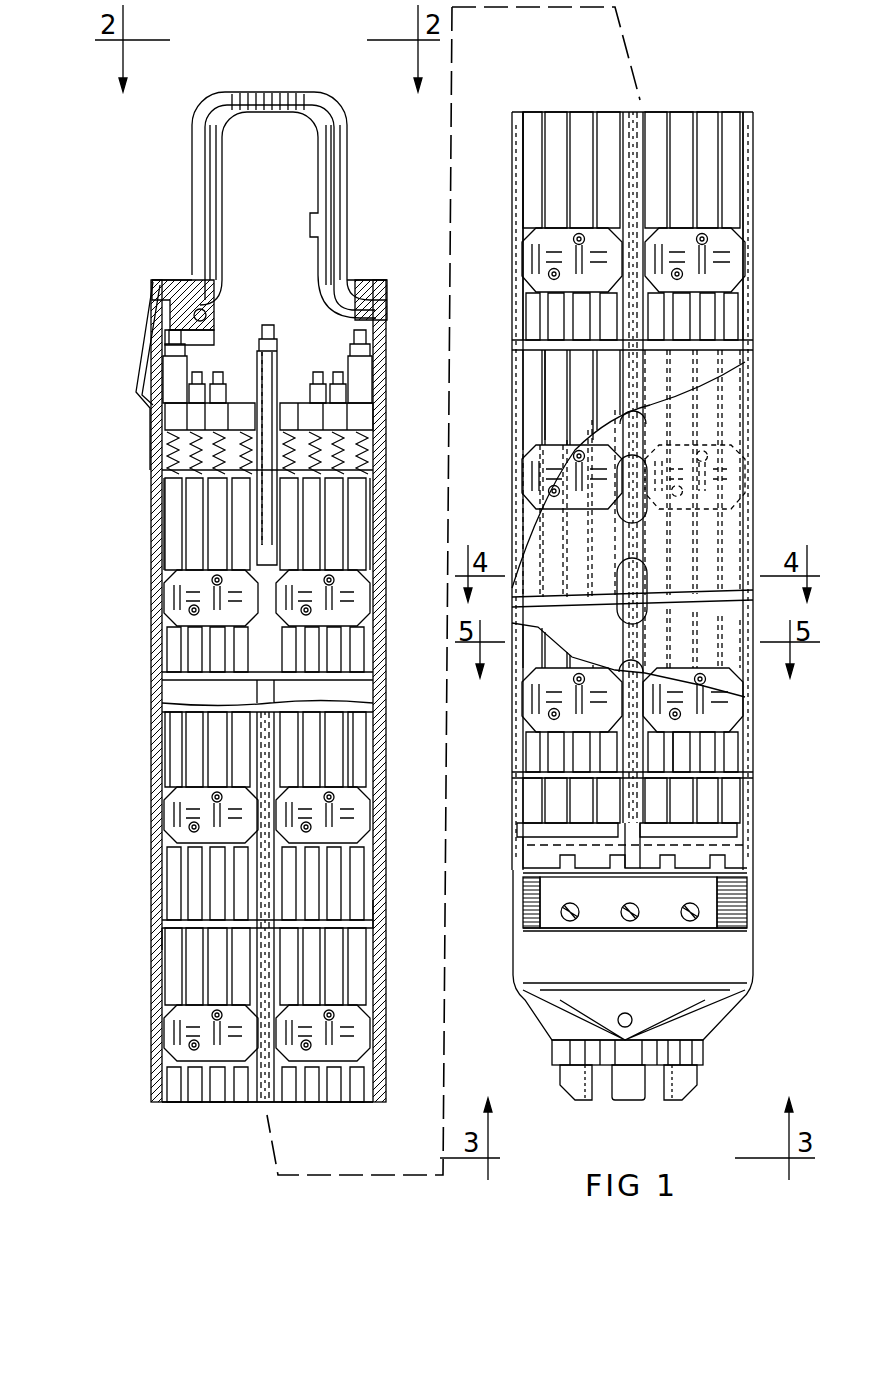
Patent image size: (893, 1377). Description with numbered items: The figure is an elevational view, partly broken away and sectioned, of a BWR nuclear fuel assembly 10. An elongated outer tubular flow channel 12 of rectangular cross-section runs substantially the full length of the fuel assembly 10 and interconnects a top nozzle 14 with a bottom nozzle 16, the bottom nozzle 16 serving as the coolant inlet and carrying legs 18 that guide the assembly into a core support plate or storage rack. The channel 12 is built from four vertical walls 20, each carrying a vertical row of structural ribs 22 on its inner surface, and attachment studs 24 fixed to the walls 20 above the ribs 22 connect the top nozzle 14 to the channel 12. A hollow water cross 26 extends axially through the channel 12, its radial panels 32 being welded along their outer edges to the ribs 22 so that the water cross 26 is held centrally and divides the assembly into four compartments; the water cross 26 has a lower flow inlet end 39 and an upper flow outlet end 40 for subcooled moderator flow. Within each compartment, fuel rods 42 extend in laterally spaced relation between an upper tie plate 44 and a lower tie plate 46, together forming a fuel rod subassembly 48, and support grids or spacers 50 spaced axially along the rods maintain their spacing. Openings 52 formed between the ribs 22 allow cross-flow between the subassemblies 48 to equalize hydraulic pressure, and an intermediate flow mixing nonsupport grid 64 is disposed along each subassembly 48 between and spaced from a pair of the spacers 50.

The nuclear fuel assembly 10 is at (128, 278).
The outer tubular flow channel 12 is at (150, 510).
The top nozzle 14 is at (388, 302).
The bottom nozzle 16 is at (715, 966).
The legs 18 is at (660, 1098).
The vertical walls 20 is at (446, 861).
The structural ribs 22 is at (446, 607).
The attachment studs 24 is at (176, 330).
The hollow water cross 26 is at (530, 607).
The radial panels 32 is at (488, 586).
The lower flow inlet end 39 is at (640, 862).
The upper flow outlet end 40 is at (262, 572).
The fuel rods 42 is at (446, 568).
The upper tie plate 44 is at (165, 420).
The lower tie plate 46 is at (636, 849).
The fuel rod subassembly 48 is at (267, 1128).
The support grids 50 is at (446, 646).
The openings 52 is at (446, 525).
The intermediate flow mixing nonsupport grid 64 is at (261, 683).